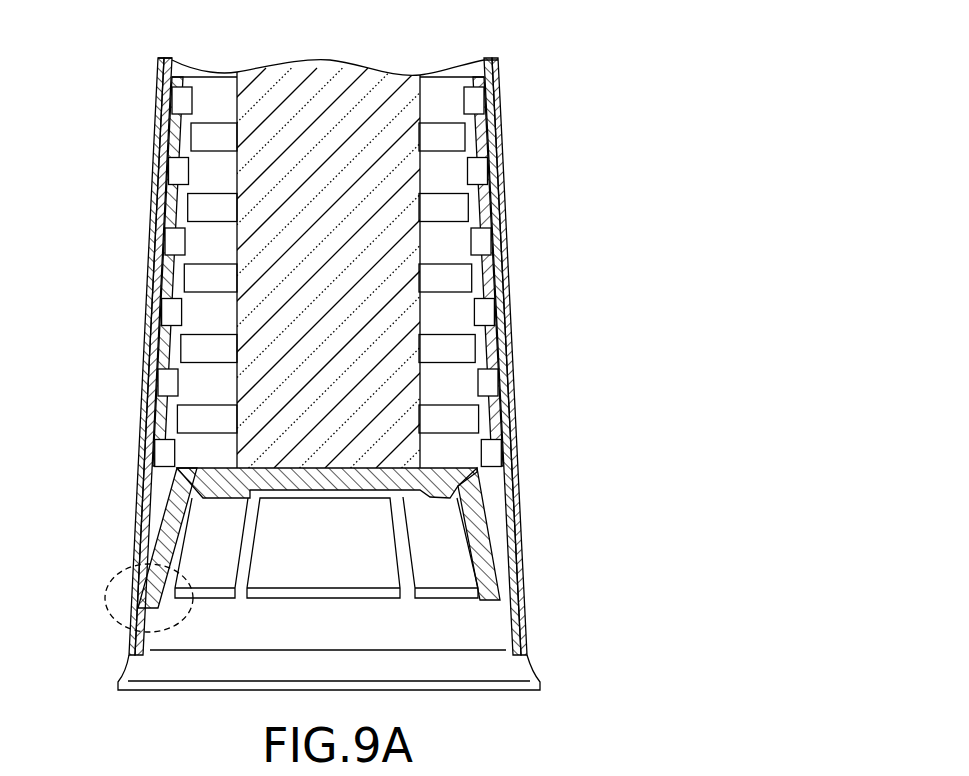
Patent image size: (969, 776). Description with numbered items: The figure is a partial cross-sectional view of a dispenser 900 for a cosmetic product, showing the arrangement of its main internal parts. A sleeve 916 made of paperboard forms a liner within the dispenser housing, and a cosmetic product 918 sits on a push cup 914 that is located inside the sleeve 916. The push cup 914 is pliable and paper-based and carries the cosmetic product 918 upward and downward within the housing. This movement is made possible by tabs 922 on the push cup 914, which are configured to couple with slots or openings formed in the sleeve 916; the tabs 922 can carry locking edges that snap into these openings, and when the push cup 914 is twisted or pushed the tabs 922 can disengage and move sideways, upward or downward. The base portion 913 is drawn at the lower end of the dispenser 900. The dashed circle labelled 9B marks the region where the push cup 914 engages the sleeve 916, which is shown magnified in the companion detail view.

The reactor assembly 900 is at (624, 84).
The sleeve 916 is at (157, 347).
The cosmetic product 918 is at (365, 268).
The push cup 914 is at (363, 495).
The tabs 922 is at (508, 586).
The base plate 913 is at (531, 690).
The detail view 9B is at (110, 577).